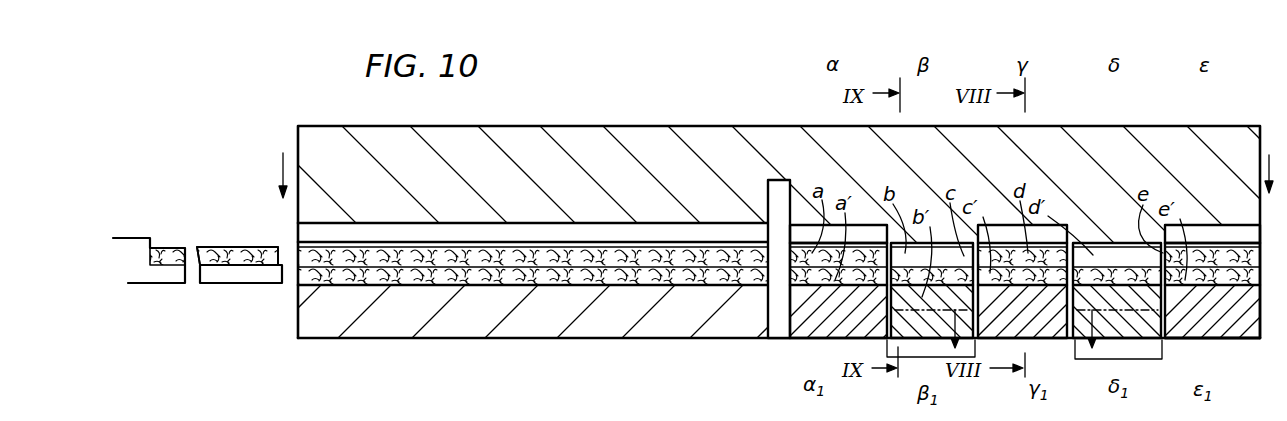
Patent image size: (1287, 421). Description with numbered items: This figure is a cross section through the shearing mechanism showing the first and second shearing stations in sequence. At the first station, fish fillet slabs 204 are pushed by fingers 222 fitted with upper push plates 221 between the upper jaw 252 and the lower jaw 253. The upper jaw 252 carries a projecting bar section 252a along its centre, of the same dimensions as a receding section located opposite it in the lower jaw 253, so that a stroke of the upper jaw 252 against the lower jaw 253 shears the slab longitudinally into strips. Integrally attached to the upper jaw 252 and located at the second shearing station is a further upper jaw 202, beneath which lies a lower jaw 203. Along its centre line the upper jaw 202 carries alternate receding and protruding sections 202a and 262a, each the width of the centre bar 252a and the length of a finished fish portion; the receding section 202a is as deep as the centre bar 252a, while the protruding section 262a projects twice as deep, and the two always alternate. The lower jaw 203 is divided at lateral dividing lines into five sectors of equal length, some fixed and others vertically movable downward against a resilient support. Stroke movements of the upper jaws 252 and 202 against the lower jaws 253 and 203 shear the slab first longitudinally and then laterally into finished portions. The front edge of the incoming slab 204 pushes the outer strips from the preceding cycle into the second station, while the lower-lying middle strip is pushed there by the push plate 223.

The upper jaw 252 is at (579, 157).
The projecting bar section 252a is at (310, 232).
The lower jaw 253 is at (395, 313).
The protruding section 262a is at (832, 284).
The further upper jaw 202 is at (1213, 160).
The receding section 202a is at (800, 235).
The lower jaw 203 is at (1223, 320).
The fish fillet slab 204 is at (247, 245).
The upper push plate 221 is at (163, 243).
The finger 222 is at (172, 277).
The push plate 223 is at (285, 283).